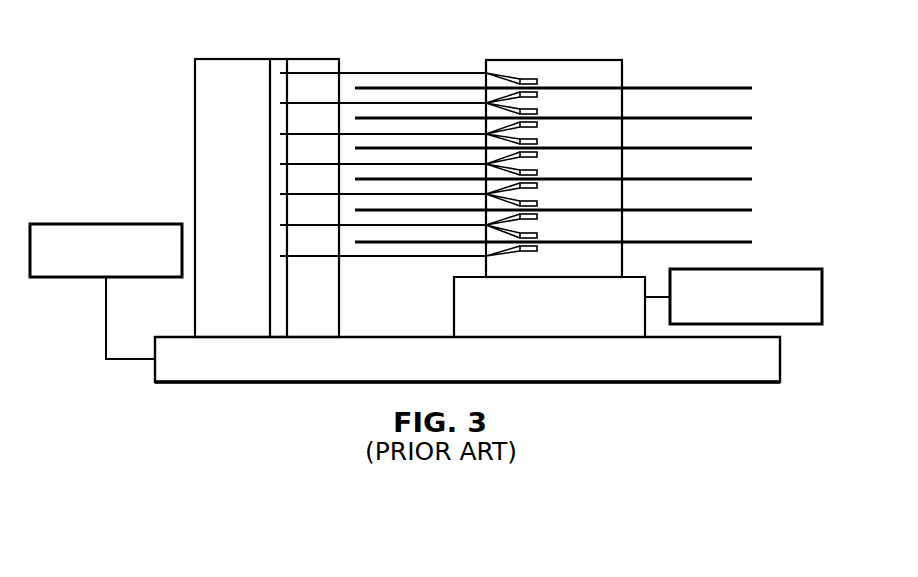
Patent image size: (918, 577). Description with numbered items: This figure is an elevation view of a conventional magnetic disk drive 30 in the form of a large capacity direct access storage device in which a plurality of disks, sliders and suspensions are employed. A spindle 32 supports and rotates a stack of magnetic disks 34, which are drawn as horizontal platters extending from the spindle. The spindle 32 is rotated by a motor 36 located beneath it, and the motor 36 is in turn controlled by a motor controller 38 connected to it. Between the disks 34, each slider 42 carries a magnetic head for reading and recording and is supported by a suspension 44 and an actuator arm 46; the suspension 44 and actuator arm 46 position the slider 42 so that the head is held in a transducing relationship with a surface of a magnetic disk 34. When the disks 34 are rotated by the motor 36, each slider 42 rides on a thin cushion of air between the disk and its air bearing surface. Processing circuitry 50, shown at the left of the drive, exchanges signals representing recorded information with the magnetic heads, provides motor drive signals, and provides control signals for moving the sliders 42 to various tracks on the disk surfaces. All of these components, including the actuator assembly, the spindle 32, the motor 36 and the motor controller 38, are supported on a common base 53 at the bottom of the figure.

The magnetic disk drive 30 is at (678, 52).
The spindle 32 is at (605, 60).
The magnetic disk 34 is at (733, 90).
The motor 36 is at (569, 318).
The motor controller 38 is at (814, 326).
The slider 42 is at (538, 100).
The suspension 44 is at (515, 100).
The actuator arm 46 is at (440, 100).
The processing circuitry 50 is at (83, 224).
The base 53 is at (210, 382).